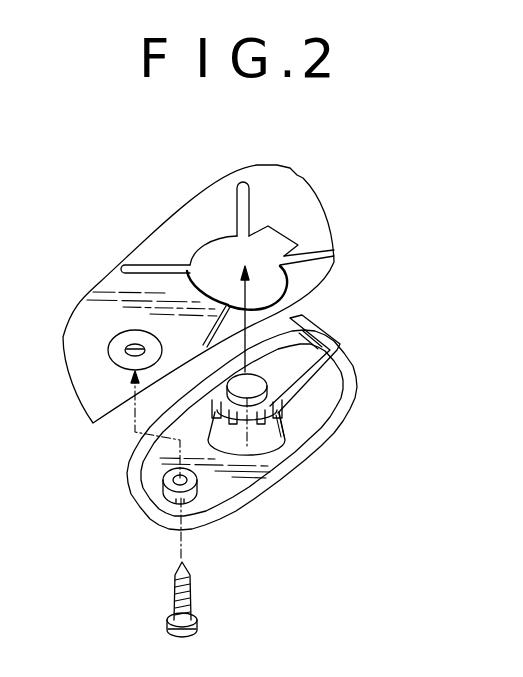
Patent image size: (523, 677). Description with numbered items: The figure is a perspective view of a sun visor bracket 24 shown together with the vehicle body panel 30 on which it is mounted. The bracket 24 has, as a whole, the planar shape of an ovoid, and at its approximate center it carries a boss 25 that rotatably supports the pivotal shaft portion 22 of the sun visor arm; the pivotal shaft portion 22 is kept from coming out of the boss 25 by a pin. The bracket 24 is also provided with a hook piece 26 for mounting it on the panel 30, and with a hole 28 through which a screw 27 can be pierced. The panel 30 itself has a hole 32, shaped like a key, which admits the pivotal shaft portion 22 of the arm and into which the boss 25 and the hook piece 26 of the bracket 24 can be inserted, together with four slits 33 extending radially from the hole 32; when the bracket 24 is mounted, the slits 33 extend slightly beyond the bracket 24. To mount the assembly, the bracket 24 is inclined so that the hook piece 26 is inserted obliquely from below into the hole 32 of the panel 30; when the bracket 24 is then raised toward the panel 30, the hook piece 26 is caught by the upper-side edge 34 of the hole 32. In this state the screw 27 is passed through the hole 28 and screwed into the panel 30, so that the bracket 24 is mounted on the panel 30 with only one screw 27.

The pivotal shaft portion 22 is at (254, 386).
The bracket 24 is at (230, 488).
The boss 25 is at (270, 437).
The hook piece 26 is at (309, 341).
The screw 27 is at (190, 592).
The hole 28 is at (162, 481).
The panel 30 is at (147, 243).
The hole 32 is at (212, 258).
The slits 33 is at (251, 188).
The upper-side edge 34 is at (283, 237).